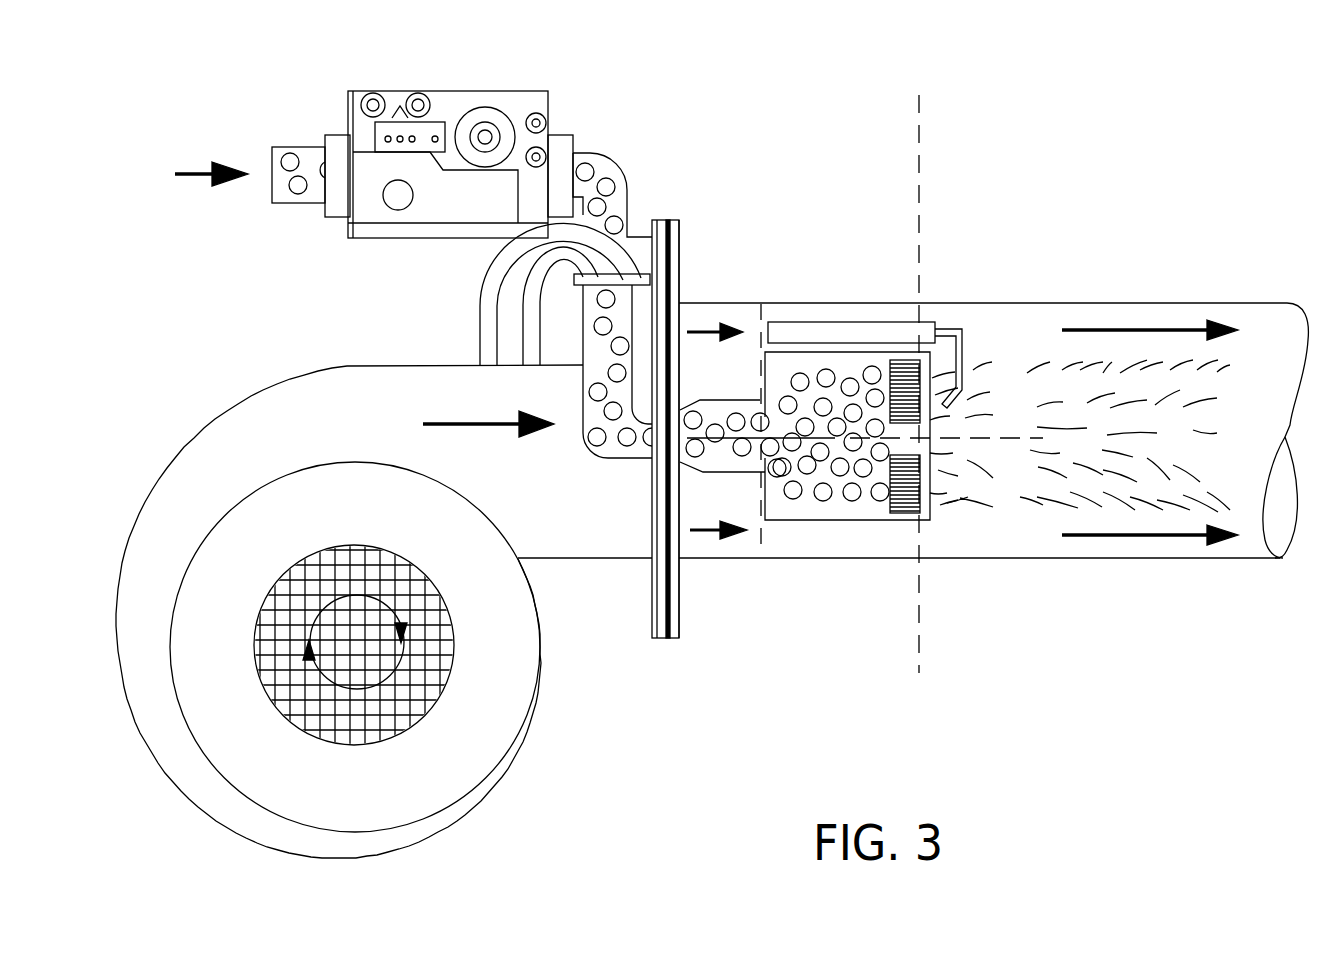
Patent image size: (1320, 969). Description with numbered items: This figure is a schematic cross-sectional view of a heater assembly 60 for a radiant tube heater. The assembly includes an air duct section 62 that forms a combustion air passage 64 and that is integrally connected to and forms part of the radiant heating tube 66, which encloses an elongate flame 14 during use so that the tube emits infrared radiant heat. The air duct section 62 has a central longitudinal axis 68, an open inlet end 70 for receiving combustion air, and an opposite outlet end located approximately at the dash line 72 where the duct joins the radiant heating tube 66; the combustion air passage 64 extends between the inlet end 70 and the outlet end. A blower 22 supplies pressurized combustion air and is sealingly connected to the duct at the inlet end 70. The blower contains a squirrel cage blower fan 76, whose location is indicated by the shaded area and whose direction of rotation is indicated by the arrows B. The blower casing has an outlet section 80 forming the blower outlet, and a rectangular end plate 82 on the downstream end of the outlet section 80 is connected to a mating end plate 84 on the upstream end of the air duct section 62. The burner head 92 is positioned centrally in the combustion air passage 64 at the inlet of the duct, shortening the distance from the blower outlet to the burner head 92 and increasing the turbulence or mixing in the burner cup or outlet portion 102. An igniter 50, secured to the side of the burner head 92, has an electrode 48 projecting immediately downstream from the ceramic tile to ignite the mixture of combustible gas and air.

The blower 22 is at (255, 437).
The blower fan 76 is at (493, 683).
The arrows B is at (360, 690).
The outlet section 80 is at (587, 560).
The rectangular end plate 82 is at (653, 640).
The end plate 84 is at (682, 590).
The inlet end 70 is at (680, 290).
The burner cup or outlet portion 102 is at (837, 522).
The heater assembly 60 is at (806, 258).
The radiant heating tube 66 is at (1220, 303).
The air duct section 62 is at (843, 320).
The igniter 50 is at (922, 325).
The electrode 48 is at (963, 350).
The dash line 72 is at (920, 138).
The combustion air passage 64 is at (888, 537).
The central longitudinal axis 68 is at (948, 440).
The burner head 92 is at (802, 522).
The elongate flame 14 is at (1143, 422).